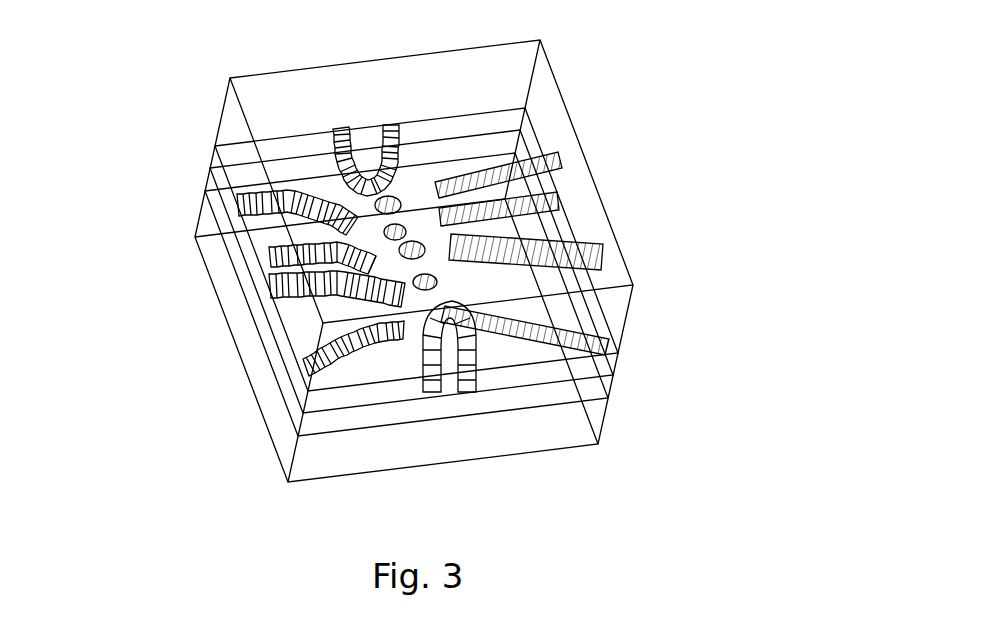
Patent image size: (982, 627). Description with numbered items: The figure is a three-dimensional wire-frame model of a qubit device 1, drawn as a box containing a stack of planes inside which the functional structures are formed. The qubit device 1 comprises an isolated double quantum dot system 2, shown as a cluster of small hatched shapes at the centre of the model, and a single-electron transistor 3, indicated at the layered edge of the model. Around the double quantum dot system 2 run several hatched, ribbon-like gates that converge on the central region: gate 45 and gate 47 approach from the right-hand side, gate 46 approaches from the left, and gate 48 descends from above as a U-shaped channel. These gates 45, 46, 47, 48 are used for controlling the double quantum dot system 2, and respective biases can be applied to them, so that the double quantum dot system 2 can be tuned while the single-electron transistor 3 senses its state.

The qubit device 1 is at (657, 154).
The isolated double quantum dot system 2 is at (401, 193).
The single-electron transistor 3 is at (593, 257).
The gate 45 is at (565, 231).
The gate 46 is at (313, 202).
The gate 47 is at (543, 183).
The gate 48 is at (360, 135).